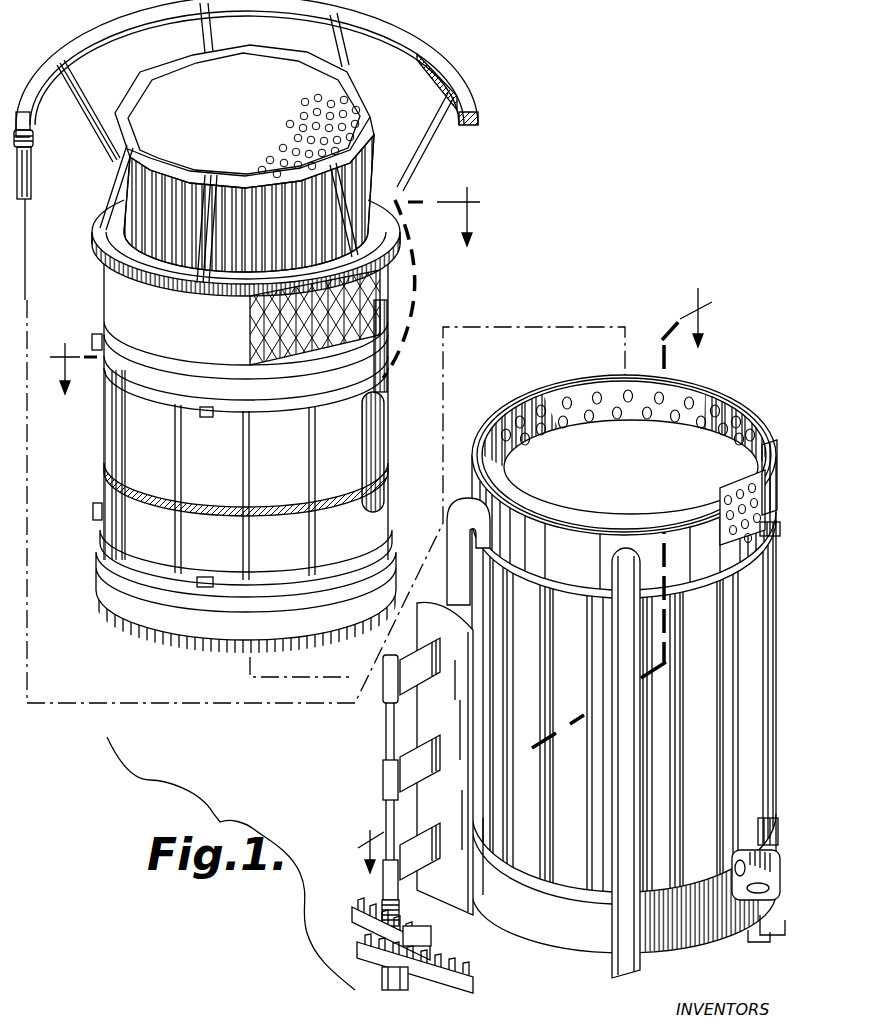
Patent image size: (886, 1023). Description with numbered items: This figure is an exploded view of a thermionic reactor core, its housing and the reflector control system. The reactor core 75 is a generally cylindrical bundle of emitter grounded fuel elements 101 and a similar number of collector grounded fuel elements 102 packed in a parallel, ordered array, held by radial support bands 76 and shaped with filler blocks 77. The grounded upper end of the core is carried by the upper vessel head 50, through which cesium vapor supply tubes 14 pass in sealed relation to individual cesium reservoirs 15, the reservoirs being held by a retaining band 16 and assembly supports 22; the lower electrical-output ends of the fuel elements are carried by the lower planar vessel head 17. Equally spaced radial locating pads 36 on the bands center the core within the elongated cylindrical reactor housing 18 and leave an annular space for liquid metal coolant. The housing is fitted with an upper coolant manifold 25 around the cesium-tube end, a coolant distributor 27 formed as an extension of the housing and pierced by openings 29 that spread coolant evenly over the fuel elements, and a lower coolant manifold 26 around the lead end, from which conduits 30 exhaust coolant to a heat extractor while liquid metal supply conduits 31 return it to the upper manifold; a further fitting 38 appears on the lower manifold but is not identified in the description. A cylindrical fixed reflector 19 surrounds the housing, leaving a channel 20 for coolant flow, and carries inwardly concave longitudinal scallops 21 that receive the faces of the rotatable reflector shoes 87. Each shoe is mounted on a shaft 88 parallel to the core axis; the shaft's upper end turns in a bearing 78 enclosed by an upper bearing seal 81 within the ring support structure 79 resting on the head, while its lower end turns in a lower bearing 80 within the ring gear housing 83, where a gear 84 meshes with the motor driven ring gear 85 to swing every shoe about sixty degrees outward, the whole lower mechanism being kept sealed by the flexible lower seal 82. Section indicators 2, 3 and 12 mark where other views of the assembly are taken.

The section line 2 is at (413, 300).
The section line 3- 3 is at (265, 283).
The section line 12- 12 is at (534, 576).
The cesium vapor supply tubes 14 is at (374, 170).
The cesium reservoirs 15 is at (356, 104).
The retaining band 16 is at (268, 37).
The lower planar vessel head 17 is at (96, 570).
The reactor housing 18 is at (634, 503).
The fixed reflector 19 is at (770, 622).
The channel 20 is at (768, 818).
The longitudinal scallops 21 is at (540, 880).
The assembly supports 22 is at (212, 215).
The upper coolant manifold 25 is at (771, 440).
The lower coolant manifold 26 is at (742, 936).
The coolant distributor 27 is at (562, 398).
The openings 29 is at (602, 396).
The conduits 30 is at (760, 938).
The liquid metal supply conduits 31 is at (450, 590).
The radial locating pads 36 is at (200, 574).
The block 38 is at (772, 878).
The upper vessel head 50 is at (402, 244).
The reactor core 75 is at (140, 316).
The radial support bands 76 is at (385, 542).
The filler blocks 77 is at (147, 432).
The bearing 78 is at (31, 123).
The ring support structure 79 is at (220, 12).
The lower bearing 80 is at (392, 990).
The upper bearing seal 81 is at (33, 170).
The flexible lower seal 82 is at (402, 935).
The ring gear housing 83 is at (428, 938).
The gear 84 is at (383, 960).
The ring gear 85 is at (458, 972).
The reflector shoe 87 is at (462, 920).
The shaft 88 is at (386, 732).
The emitter grounded fuel elements 101 is at (378, 415).
The collector grounded fuel elements 102 is at (378, 438).